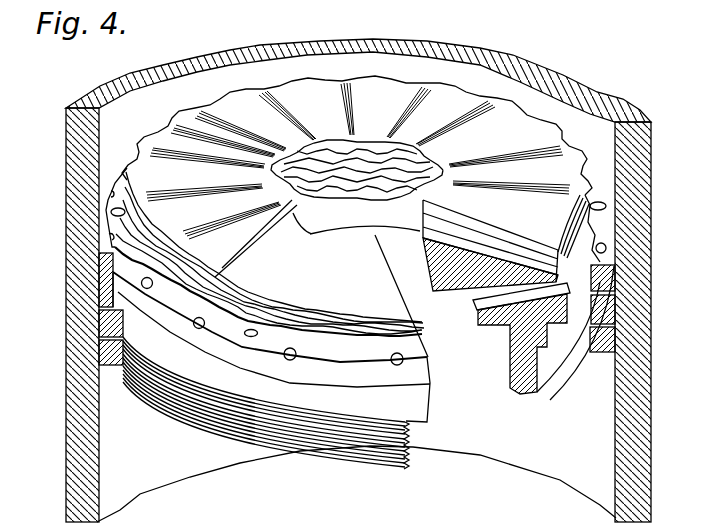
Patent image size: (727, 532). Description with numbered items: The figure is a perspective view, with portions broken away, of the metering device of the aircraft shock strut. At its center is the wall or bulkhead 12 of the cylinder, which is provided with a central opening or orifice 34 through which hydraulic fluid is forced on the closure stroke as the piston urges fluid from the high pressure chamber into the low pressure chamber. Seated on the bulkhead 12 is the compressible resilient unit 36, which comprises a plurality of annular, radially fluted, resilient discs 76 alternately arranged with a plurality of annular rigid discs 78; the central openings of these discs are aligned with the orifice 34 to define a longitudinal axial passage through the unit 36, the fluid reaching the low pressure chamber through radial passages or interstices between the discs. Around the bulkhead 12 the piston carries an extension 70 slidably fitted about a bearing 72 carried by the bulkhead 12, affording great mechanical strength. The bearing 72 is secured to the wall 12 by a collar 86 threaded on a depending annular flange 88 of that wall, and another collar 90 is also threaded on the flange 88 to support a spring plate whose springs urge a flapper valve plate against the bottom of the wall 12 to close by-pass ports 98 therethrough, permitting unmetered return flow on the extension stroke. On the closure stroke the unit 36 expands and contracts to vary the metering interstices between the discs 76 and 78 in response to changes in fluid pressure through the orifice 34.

The wall or bulkhead 12 is at (458, 275).
The central opening or orifice 34 is at (328, 207).
The compressible resilient unit 36 is at (304, 99).
The extension 70 is at (647, 252).
The bearing 72 is at (99, 281).
The annular, radially fluted, resilient discs 76 is at (447, 97).
The annular rigid discs 78 is at (362, 250).
The collar 86 is at (610, 307).
The depending annular flange 88 is at (430, 409).
The collar 90 is at (607, 340).
The by-pass ports 98 is at (290, 360).